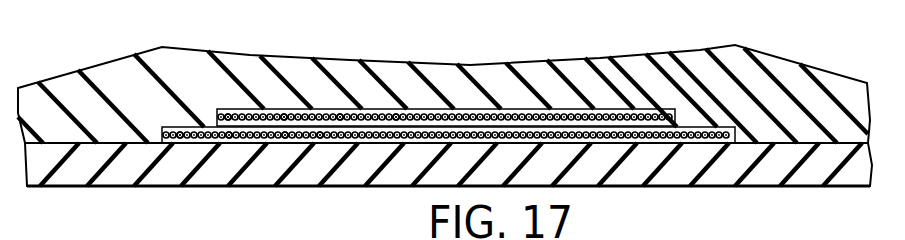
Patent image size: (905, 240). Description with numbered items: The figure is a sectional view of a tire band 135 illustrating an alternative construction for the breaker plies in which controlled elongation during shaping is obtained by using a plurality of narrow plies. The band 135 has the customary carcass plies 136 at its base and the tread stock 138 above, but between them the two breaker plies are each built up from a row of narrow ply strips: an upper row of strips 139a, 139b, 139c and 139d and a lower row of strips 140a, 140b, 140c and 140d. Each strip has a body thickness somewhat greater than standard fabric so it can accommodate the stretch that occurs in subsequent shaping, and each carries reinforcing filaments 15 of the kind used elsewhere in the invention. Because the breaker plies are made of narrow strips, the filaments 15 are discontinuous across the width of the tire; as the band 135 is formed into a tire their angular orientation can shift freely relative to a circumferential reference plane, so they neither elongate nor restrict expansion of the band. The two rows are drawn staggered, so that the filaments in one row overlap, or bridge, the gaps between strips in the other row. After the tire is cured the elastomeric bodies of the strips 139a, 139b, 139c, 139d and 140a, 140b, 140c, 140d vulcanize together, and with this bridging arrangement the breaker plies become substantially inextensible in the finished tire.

The tire band 135 is at (673, 50).
The tread stock 138 is at (505, 67).
The carcass plies 136 is at (672, 172).
The reinforcing filaments 15 is at (435, 118).
The narrow ply strip 139a is at (229, 108).
The narrow ply strip 139b is at (283, 108).
The narrow ply strip 139c is at (339, 108).
The narrow ply strip 139d is at (393, 108).
The narrow ply strip 140a is at (183, 145).
The narrow ply strip 140b is at (228, 145).
The narrow ply strip 140c is at (282, 145).
The narrow ply strip 140d is at (320, 146).